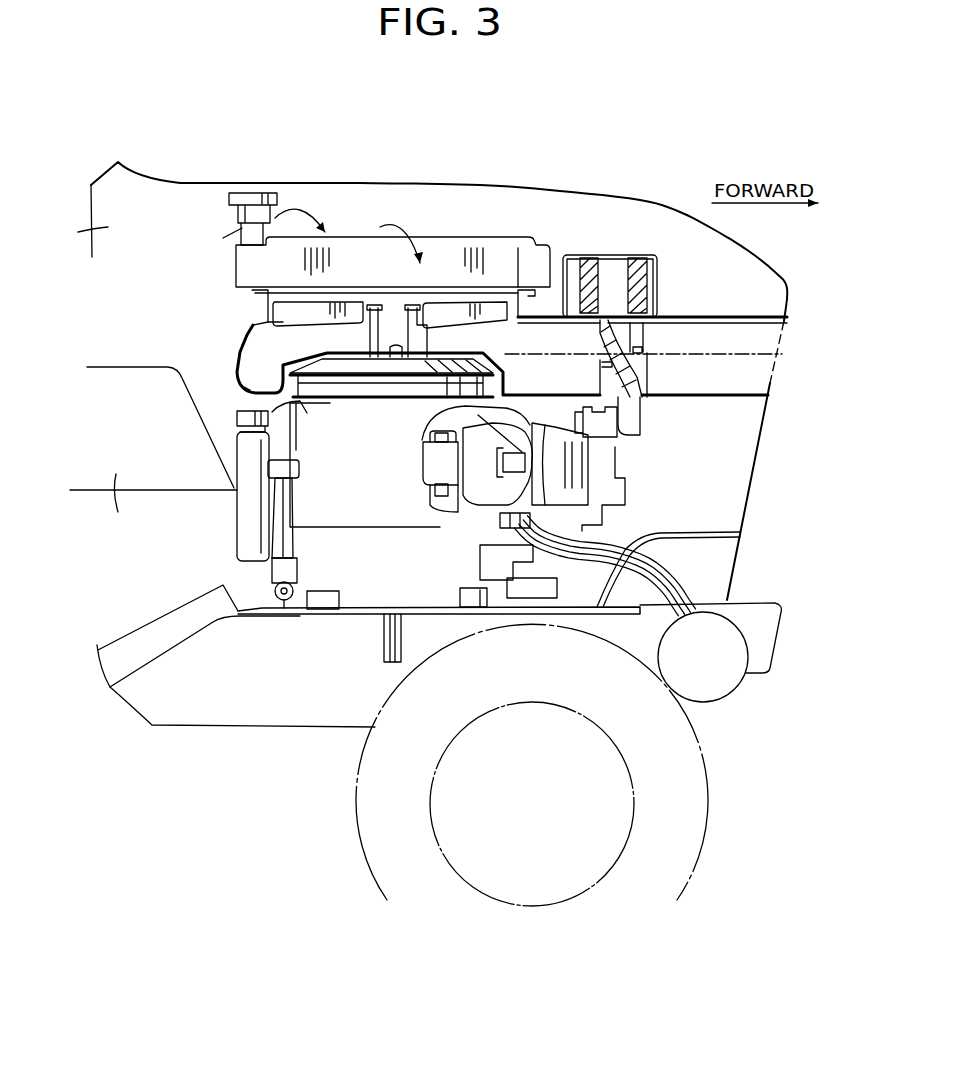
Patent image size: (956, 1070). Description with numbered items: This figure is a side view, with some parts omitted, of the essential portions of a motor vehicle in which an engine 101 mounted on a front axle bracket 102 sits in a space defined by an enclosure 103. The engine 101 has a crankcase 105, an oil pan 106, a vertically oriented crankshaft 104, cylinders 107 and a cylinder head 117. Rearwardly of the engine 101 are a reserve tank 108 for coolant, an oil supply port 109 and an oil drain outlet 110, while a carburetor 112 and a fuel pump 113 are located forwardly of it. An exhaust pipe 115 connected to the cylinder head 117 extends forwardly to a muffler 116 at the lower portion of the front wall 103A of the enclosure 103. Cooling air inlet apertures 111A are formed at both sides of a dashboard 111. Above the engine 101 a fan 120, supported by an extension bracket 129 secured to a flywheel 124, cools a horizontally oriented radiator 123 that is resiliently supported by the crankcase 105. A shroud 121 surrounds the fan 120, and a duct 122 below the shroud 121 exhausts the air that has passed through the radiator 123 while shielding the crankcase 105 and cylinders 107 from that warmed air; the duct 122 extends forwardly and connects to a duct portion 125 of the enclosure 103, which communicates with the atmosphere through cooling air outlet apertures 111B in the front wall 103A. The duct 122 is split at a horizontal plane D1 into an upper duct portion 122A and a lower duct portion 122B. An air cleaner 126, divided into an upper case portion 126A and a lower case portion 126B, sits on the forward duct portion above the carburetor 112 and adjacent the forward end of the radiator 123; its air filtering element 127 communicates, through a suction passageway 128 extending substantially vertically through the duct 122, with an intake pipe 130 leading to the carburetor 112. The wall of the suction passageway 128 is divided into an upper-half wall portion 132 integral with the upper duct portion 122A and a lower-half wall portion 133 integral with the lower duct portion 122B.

The engine 101 is at (372, 505).
The front axle bracket 102 is at (288, 712).
The enclosure 103 is at (605, 192).
The front wall of the enclosure 103A is at (762, 428).
The crankshaft 104 is at (385, 636).
The crankcase 105 is at (307, 413).
The oil pan 106 is at (346, 600).
The cylinders 107 is at (443, 503).
The reserve tank 108 is at (245, 545).
The oil supply port 109 is at (282, 470).
The oil drain outlet 110 is at (283, 601).
The dashboard 111 is at (139, 351).
The cooling air inlet apertures 111A is at (153, 510).
The cooling air outlet apertures 111B is at (782, 347).
The carburetor 112 is at (612, 447).
The fuel pump 113 is at (590, 503).
The exhaust pipe 115 is at (655, 585).
The muffler 116 is at (716, 683).
The cylinder head 117 is at (482, 502).
The fan 120 is at (258, 322).
The shroud 121 is at (258, 297).
The duct 122 is at (230, 365).
The upper duct portion 122A is at (240, 340).
The lower duct portion 122B is at (245, 383).
The radiator 123 is at (238, 258).
The flywheel 124 is at (366, 385).
The duct portion of the enclosure 125 is at (702, 398).
The air cleaner 126 is at (624, 240).
The upper case portion 126A is at (667, 257).
The lower case portion 126B is at (655, 306).
The air filtering element 127 is at (480, 232).
The suction passageway 128 is at (612, 375).
The extension bracket 129 is at (390, 273).
The intake pipe 130 is at (638, 427).
The upper-half wall portion 132 is at (600, 340).
The lower-half wall portion 133 is at (646, 365).
The horizontal plane D1 is at (655, 380).